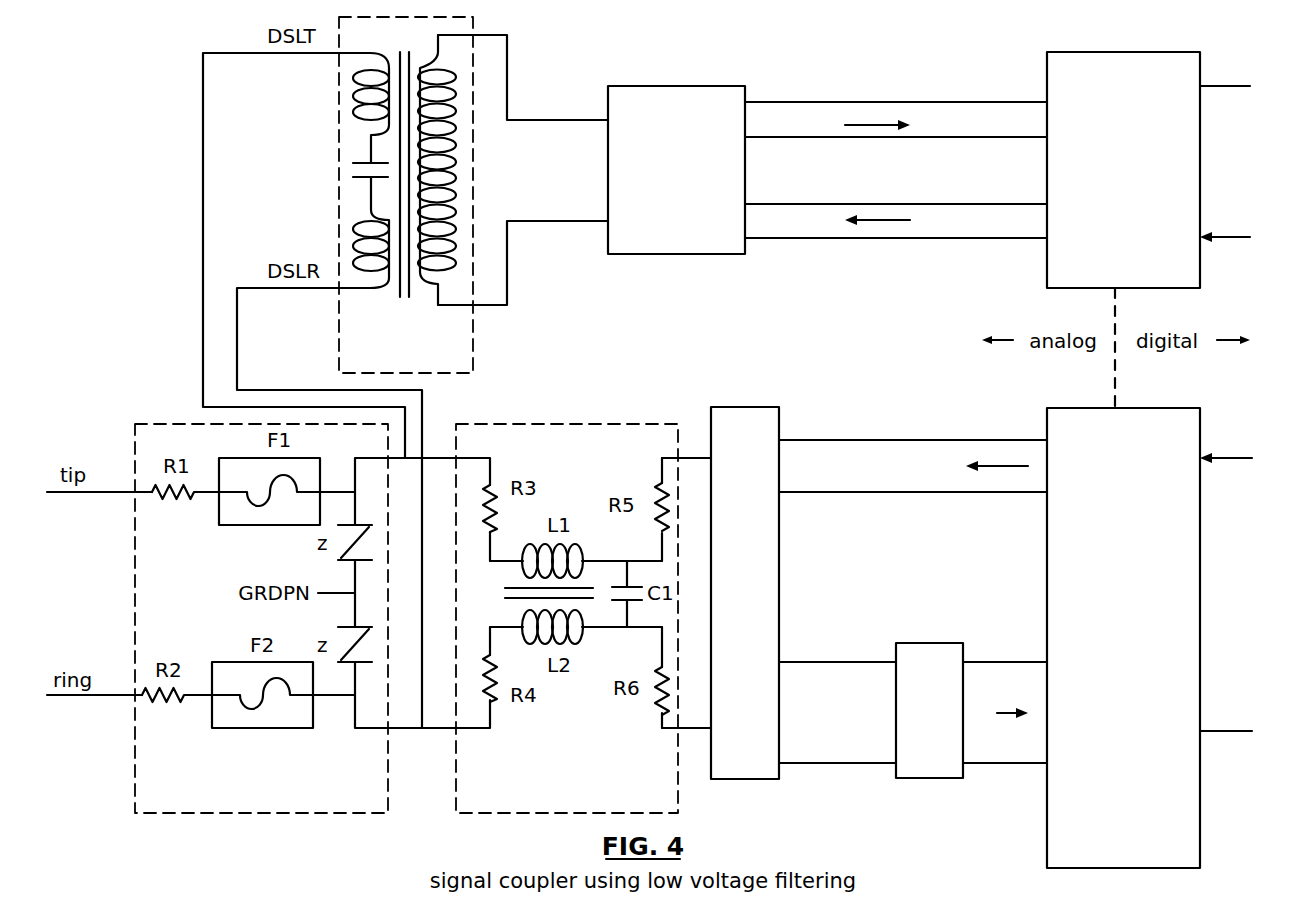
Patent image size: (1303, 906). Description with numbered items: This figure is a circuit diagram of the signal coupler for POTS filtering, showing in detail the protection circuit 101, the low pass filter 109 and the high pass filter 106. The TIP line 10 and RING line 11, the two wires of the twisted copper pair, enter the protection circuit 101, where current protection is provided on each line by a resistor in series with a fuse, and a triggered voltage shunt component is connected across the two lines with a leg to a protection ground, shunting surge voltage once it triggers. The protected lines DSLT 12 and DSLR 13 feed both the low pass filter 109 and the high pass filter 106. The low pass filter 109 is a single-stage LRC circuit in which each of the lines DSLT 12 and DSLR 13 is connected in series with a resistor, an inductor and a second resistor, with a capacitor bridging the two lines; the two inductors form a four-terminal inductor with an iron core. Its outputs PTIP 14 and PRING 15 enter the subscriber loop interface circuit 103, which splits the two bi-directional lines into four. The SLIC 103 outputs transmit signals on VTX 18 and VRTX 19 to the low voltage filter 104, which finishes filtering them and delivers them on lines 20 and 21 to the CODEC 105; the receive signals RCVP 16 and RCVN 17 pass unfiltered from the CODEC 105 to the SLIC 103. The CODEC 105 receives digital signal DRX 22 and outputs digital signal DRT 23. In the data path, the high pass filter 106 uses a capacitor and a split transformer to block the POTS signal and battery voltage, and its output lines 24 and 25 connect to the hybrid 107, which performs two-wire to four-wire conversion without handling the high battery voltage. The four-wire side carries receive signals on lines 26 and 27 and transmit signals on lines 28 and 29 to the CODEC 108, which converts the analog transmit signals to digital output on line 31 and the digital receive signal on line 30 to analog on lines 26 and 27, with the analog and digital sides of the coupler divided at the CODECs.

The TIP line 10 is at (99, 505).
The RING line 11 is at (94, 707).
The DSLT line 12 is at (203, 307).
The DSLR line 13 is at (237, 305).
The PTIP line 14 is at (695, 455).
The PRING line 15 is at (695, 730).
The RCVP line 16 is at (913, 425).
The RCVN line 17 is at (913, 476).
The VTX line 18 is at (837, 647).
The VRTX line 19 is at (837, 749).
The VTX line 20 is at (1025, 662).
The VRTX line 21 is at (1025, 763).
The DRX digital signal 22 is at (1213, 458).
The DRT digital signal 23 is at (1213, 731).
The high pass filter output line 24 is at (593, 120).
The high pass filter output line 25 is at (593, 221).
The receive line 26 is at (812, 102).
The receive line 27 is at (812, 137).
The transmit line 28 is at (812, 204).
The transmit line 29 is at (812, 238).
The digital receive line 30 is at (1217, 86).
The digital transmit line 31 is at (1217, 237).
The protection circuit 101 is at (261, 618).
The subscriber loop interface circuit 103 is at (745, 593).
The low voltage filter 104 is at (962, 710).
The coder/decoder circuit 105 is at (1123, 638).
The high pass filter 106 is at (406, 195).
The hybrid 107 is at (676, 170).
The CODEC 108 is at (1123, 170).
The low pass filter 109 is at (567, 618).